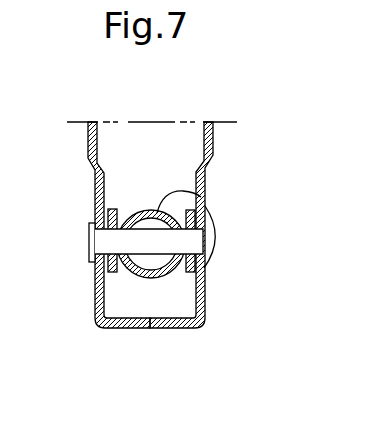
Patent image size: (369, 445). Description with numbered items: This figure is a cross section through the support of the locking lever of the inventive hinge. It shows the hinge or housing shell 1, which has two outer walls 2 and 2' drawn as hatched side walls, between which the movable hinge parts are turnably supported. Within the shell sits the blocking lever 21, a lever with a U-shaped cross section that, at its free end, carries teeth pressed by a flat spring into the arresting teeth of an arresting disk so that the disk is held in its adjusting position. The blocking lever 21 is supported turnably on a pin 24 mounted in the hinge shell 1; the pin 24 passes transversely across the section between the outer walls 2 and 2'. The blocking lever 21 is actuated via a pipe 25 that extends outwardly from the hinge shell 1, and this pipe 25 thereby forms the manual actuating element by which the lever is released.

The hinge shell 1 is at (178, 102).
The outer wall 2 is at (97, 225).
The outer wall 2' is at (207, 225).
The blocking lever 21 is at (142, 279).
The pin 24 is at (115, 242).
The pipe 25 is at (205, 197).